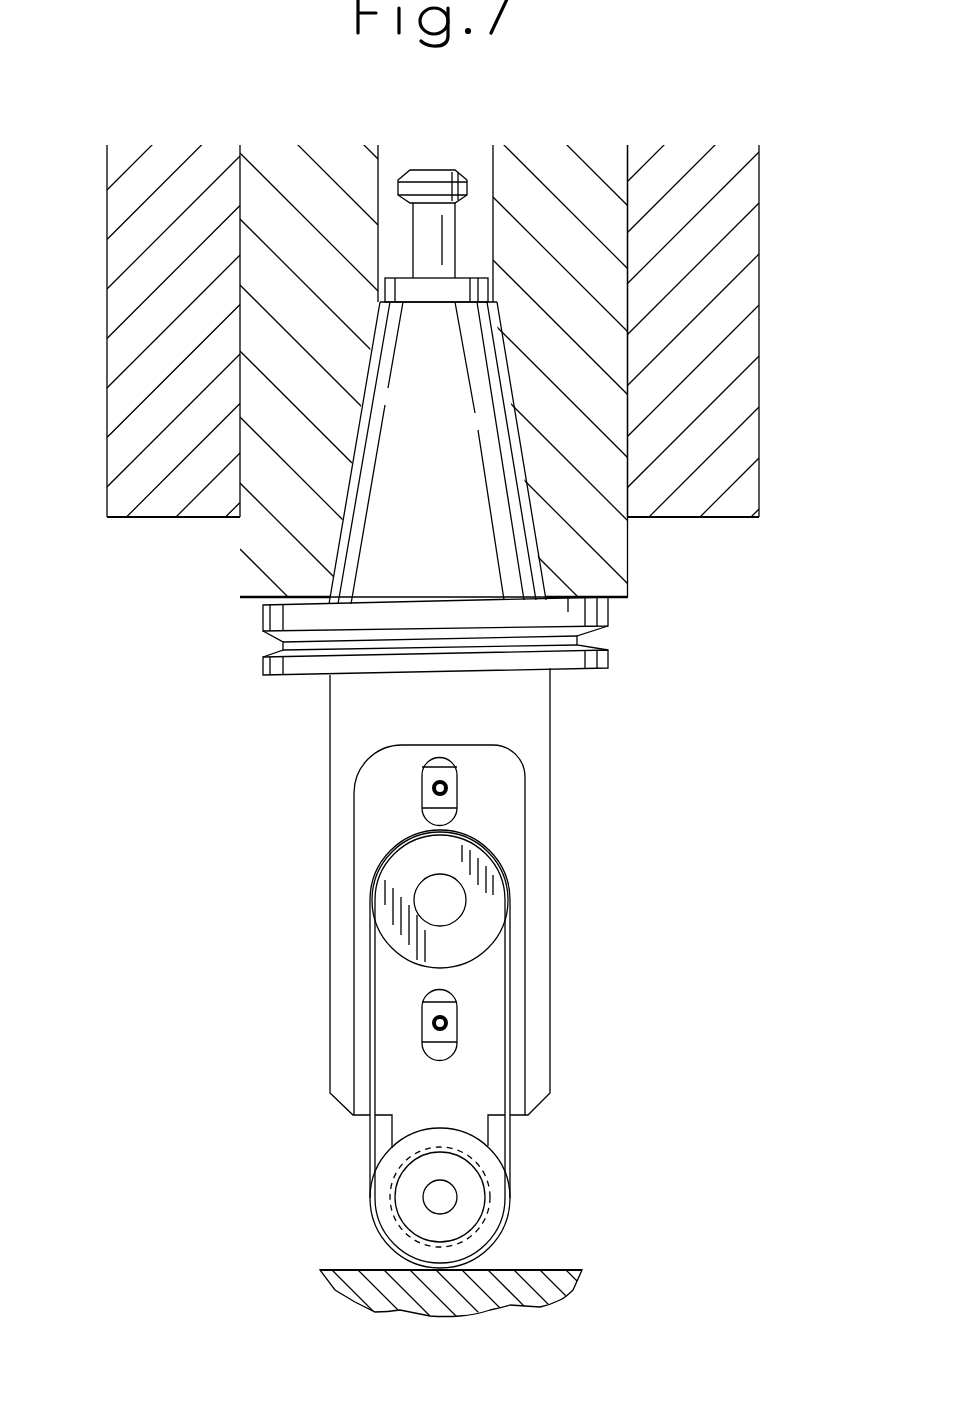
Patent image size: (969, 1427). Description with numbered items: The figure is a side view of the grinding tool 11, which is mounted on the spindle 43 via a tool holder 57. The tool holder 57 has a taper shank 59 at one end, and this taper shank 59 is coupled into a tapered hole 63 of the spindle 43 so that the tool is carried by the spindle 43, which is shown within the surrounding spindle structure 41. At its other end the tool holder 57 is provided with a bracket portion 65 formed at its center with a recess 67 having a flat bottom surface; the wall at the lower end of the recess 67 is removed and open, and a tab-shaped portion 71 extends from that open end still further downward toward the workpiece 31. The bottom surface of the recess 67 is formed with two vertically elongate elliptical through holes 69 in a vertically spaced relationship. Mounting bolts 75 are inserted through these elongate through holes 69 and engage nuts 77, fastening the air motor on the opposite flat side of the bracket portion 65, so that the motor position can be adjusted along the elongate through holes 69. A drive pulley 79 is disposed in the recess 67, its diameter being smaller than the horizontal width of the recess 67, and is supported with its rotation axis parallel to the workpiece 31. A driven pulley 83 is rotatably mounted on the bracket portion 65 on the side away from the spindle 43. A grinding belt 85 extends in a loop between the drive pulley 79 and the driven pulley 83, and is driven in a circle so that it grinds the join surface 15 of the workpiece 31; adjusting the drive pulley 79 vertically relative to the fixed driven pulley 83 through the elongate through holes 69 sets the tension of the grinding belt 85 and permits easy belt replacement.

The grinding tool 11 is at (288, 1003).
The join surface 15 is at (335, 1268).
The workpiece 31 is at (553, 1275).
The spindle housing 41 is at (743, 252).
The spindle 43 is at (625, 553).
The tool holder 57 is at (622, 610).
The taper shank 59 is at (523, 465).
The tapered hole 63 is at (508, 374).
The bracket portion 65 is at (538, 723).
The recess 67 is at (478, 997).
The elongate through holes 69 is at (452, 813).
The tab-shaped portion 71 is at (477, 1127).
The mounting bolts 75 is at (450, 788).
The nuts 77 is at (450, 776).
The drive pulley 79 is at (485, 905).
The driven pulley 83 is at (497, 1212).
The grinding belt 85 is at (515, 1178).